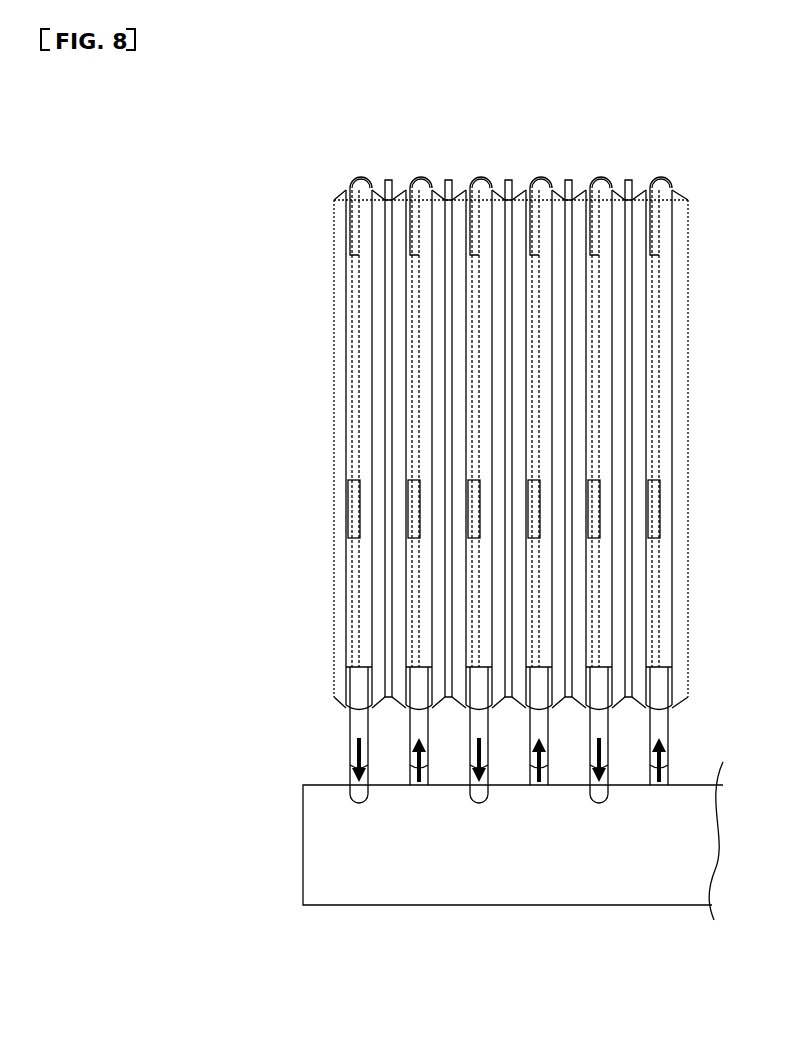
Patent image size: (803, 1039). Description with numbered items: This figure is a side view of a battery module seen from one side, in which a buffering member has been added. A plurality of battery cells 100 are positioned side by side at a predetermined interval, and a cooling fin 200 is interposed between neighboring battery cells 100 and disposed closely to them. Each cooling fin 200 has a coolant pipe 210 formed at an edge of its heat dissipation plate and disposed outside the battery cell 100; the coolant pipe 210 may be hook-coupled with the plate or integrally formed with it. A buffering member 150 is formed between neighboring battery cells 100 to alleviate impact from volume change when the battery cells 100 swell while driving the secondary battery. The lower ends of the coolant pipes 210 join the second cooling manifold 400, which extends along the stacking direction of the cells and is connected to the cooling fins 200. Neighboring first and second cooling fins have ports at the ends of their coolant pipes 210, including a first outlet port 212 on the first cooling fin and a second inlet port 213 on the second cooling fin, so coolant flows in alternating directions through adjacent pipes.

The battery cell 100 is at (403, 198).
The buffering member 150 is at (575, 184).
The cooling fin 200 is at (475, 177).
The coolant pipe 210 is at (355, 226).
The first outlet port 212 is at (356, 796).
The second inlet port 213 is at (430, 763).
The second cooling manifold 400 is at (513, 877).